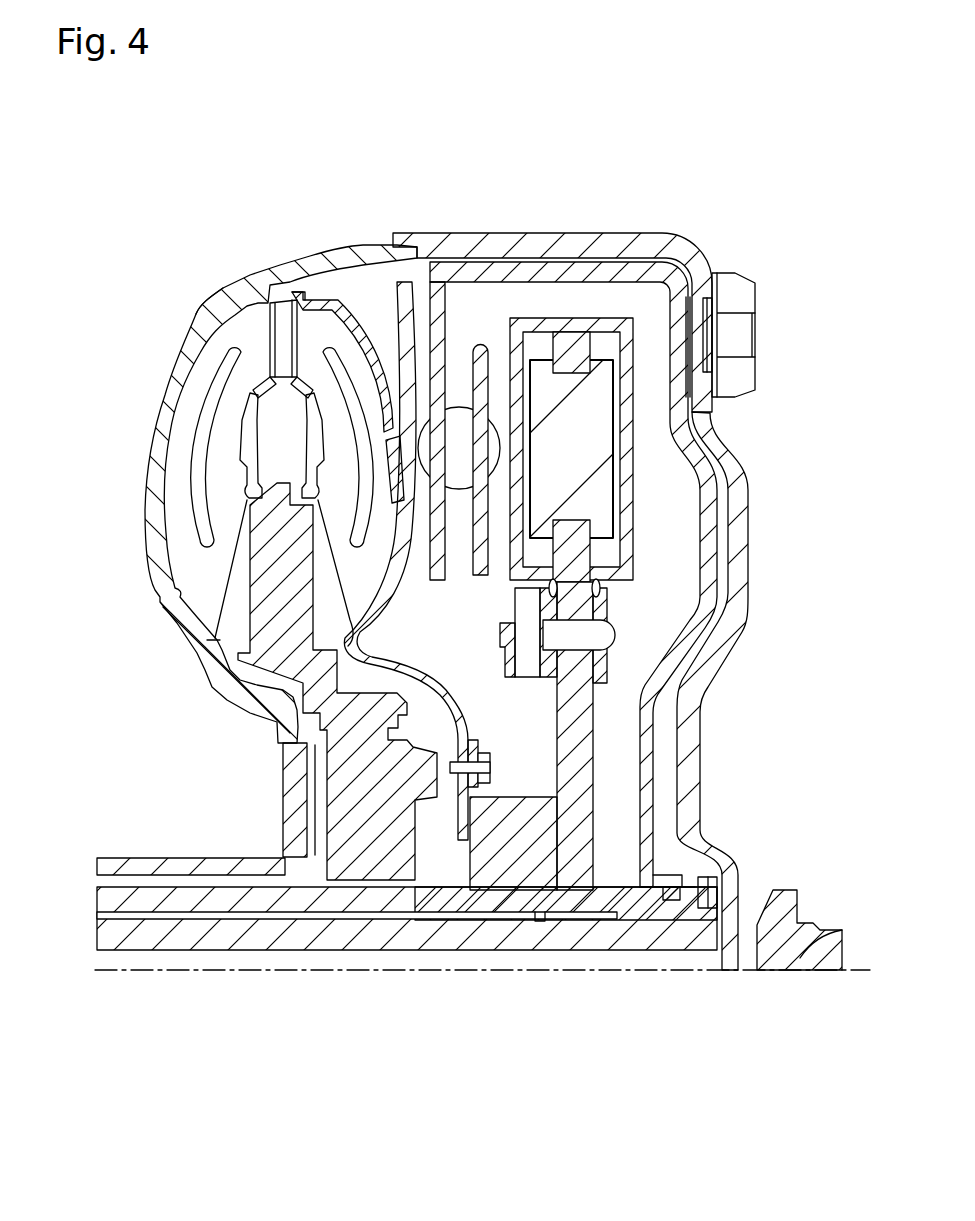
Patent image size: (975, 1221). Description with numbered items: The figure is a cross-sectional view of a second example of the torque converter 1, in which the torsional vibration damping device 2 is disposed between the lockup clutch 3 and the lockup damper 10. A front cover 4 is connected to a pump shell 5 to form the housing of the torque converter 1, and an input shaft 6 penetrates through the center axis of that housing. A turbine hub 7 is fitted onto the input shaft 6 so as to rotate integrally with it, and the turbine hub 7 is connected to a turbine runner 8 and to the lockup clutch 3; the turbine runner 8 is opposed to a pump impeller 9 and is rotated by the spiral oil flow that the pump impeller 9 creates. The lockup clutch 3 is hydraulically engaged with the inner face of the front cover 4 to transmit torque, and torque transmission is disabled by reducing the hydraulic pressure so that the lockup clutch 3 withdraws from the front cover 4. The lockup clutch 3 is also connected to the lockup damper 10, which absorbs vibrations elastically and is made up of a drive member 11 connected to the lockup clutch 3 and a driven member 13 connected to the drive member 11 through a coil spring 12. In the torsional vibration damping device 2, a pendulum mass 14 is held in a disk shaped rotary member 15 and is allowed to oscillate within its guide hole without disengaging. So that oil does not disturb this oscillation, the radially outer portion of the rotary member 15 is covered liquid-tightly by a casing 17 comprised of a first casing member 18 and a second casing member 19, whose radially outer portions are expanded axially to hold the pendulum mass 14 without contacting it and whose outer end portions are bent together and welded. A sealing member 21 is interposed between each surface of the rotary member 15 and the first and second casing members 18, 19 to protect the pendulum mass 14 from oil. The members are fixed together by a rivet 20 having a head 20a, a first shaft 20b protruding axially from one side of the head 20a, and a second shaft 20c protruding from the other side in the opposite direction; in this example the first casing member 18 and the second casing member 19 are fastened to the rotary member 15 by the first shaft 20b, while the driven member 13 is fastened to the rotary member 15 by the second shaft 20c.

The torque converter 1 is at (512, 166).
The torsional vibration damping device 2 is at (570, 303).
The lockup clutch 3 is at (695, 275).
The front cover 4 is at (432, 243).
The pump shell 5 is at (222, 297).
The input shaft 6 is at (365, 936).
The turbine hub 7 is at (580, 902).
The turbine runner 8 is at (380, 365).
The pump impeller 9 is at (186, 345).
The lockup damper 10 is at (460, 320).
The drive member 11 is at (310, 385).
The coil spring 12 is at (422, 455).
The driven member 13 is at (425, 530).
The pendulum mass 14 is at (578, 453).
The rotary member 15 is at (580, 775).
The casing 17 is at (690, 449).
The first casing member 18 is at (633, 490).
The second casing member 19 is at (627, 547).
The rivet 20 is at (685, 650).
The head 20a is at (527, 673).
The first shaft 20b is at (535, 655).
The second shaft 20c is at (575, 633).
The sealing member 21 is at (600, 592).